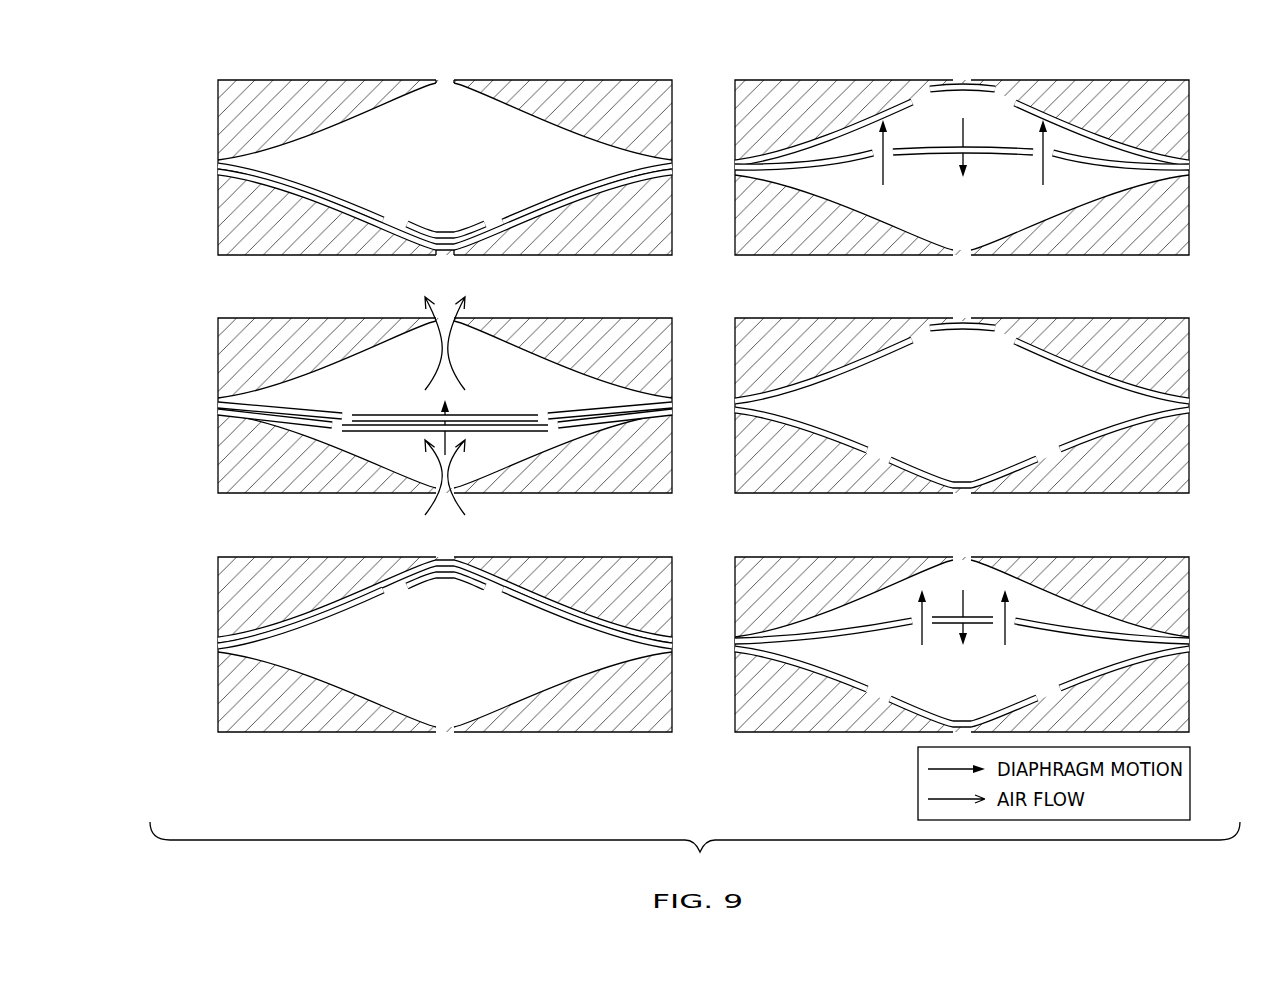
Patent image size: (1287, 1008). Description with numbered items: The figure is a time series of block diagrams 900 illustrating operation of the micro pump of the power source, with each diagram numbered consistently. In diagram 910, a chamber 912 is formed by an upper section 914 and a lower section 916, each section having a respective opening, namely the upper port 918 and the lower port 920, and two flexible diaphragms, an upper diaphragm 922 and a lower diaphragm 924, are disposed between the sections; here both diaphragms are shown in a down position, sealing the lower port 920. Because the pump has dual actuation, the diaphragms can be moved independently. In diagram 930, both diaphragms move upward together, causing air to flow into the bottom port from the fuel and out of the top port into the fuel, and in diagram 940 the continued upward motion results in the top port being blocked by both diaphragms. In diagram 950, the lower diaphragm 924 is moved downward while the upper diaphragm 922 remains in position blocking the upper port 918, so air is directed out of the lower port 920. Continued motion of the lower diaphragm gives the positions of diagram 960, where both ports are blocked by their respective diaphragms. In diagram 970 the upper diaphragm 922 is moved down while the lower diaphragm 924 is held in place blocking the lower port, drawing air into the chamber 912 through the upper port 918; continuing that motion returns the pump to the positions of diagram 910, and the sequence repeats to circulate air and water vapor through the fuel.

The series of block diagrams 900 is at (246, 42).
The diagram 910 is at (218, 126).
The chamber 912 is at (343, 133).
The upper section 914 is at (660, 122).
The lower section 916 is at (660, 219).
The upper port 918 is at (445, 82).
The lower port 920 is at (447, 255).
The upper diaphragm 922 is at (327, 194).
The lower diaphragm 924 is at (307, 195).
The diagram 930 is at (218, 363).
The diagram 940 is at (218, 606).
The diagram 950 is at (1192, 118).
The diagram 960 is at (1192, 357).
The diagram 970 is at (1192, 597).